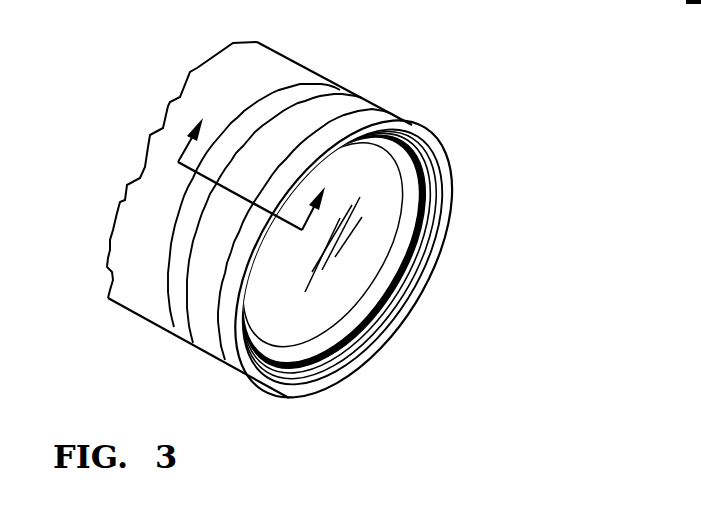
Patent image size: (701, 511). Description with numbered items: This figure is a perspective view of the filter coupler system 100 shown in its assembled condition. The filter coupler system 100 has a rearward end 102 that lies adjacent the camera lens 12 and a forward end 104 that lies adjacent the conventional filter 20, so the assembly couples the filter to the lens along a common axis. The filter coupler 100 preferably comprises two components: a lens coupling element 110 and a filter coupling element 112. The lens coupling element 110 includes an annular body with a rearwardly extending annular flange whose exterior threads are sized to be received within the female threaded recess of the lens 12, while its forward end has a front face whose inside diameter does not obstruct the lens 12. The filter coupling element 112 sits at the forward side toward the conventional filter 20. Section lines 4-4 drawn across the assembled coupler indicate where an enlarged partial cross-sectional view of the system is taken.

The camera lens 12 is at (306, 65).
The filter coupler system 100 is at (315, 221).
The lens coupling element 110 is at (341, 103).
The filter coupling element 112 is at (378, 118).
The conventional filter 20 is at (441, 134).
The rearward end 102 is at (168, 314).
The forward end 104 is at (225, 357).
The section lines 4- 4 is at (259, 164).